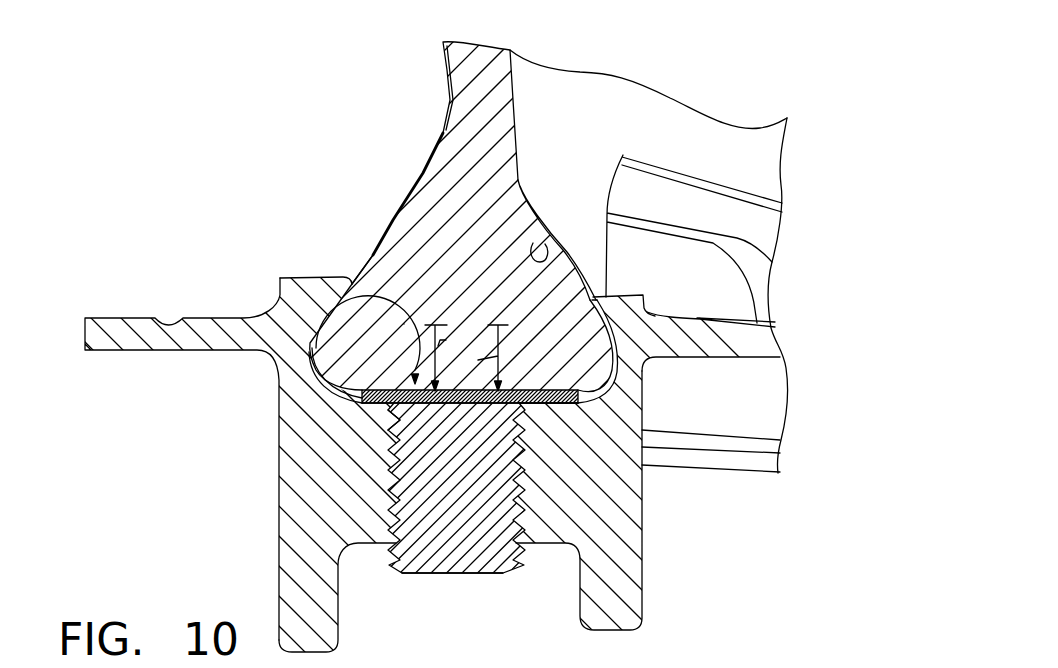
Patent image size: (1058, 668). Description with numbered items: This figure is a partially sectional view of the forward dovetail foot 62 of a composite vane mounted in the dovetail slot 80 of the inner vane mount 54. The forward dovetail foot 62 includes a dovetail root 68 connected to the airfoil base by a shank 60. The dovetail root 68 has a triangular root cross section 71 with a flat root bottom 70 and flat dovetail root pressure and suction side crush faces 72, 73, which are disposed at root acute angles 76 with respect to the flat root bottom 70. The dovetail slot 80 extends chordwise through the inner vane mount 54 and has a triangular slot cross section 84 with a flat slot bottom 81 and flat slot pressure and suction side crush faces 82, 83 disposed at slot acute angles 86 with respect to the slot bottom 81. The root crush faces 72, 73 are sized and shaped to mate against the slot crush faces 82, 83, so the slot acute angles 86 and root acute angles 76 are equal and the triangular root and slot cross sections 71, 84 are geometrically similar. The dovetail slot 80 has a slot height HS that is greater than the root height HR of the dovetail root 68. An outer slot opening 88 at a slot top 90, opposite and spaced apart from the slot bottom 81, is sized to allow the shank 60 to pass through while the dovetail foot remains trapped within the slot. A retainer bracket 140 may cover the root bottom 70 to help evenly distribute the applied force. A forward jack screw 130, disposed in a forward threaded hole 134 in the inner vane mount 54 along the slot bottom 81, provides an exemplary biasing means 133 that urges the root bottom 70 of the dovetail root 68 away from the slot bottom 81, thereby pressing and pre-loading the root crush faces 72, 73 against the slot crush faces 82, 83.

The inner vane mount 54 is at (278, 470).
The shank 60 is at (445, 78).
The forward dovetail foot 62 is at (530, 53).
The dovetail root 68 is at (435, 158).
The flat root bottom 70 is at (500, 406).
The triangular root cross section 71 is at (473, 155).
The dovetail root pressure side crush face 72 is at (395, 215).
The dovetail root suction side crush face 73 is at (525, 214).
The root acute angles 76 is at (540, 378).
The dovetail slot 80 is at (582, 402).
The flat slot bottom 81 is at (580, 411).
The slot pressure side crush face 82 is at (333, 321).
The slot suction side crush face 83 is at (541, 248).
The triangular slot cross section 84 is at (372, 296).
The slot acute angles 86 is at (404, 324).
The outer slot opening 88 is at (348, 281).
The slot top 90 is at (584, 322).
The forward jack screw 130 is at (447, 573).
The biasing means 133 is at (504, 598).
The forward threaded hole 134 is at (362, 402).
The retainer bracket 140 is at (358, 400).
The slot height HS is at (451, 358).
The root height HR is at (477, 358).